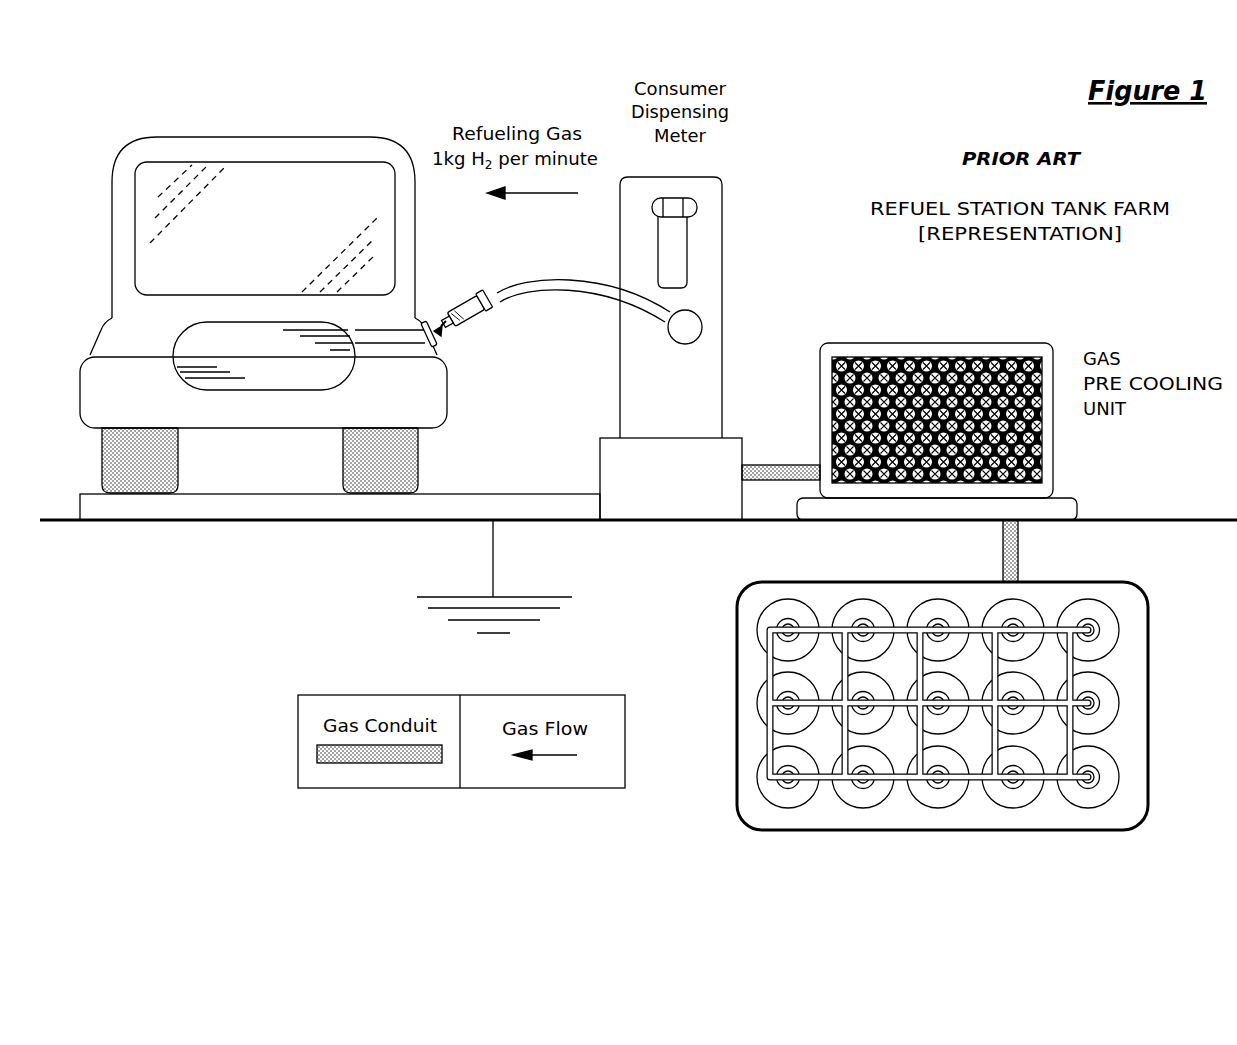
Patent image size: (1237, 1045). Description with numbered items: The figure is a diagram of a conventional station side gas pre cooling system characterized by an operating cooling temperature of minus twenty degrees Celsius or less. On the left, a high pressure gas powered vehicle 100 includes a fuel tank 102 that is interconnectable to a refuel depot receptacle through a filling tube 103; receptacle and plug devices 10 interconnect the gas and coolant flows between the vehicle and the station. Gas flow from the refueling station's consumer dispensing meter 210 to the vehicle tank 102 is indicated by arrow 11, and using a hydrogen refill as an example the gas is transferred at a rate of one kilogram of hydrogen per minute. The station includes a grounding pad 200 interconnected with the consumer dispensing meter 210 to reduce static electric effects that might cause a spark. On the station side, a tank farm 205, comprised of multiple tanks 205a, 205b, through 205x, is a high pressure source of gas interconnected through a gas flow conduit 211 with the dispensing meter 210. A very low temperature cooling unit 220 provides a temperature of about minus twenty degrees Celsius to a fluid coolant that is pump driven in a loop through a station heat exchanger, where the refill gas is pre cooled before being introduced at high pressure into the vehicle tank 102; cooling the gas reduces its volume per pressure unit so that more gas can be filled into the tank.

The high pressure gas powered vehicle 100 is at (222, 180).
The fuel tank 102 is at (247, 320).
The filling tube 103 is at (392, 338).
The receptacle and plug devices 10 is at (475, 327).
The arrow 11 is at (445, 330).
The grounding pad 200 is at (175, 521).
The consumer dispensing meter 210 is at (703, 205).
The gas flow conduit 211 is at (1018, 540).
The very low temperature cooling unit 220 is at (935, 343).
The tank farm 205 is at (942, 741).
The tank 205a is at (1087, 797).
The tank 205b is at (1005, 802).
The tank 205x is at (790, 802).